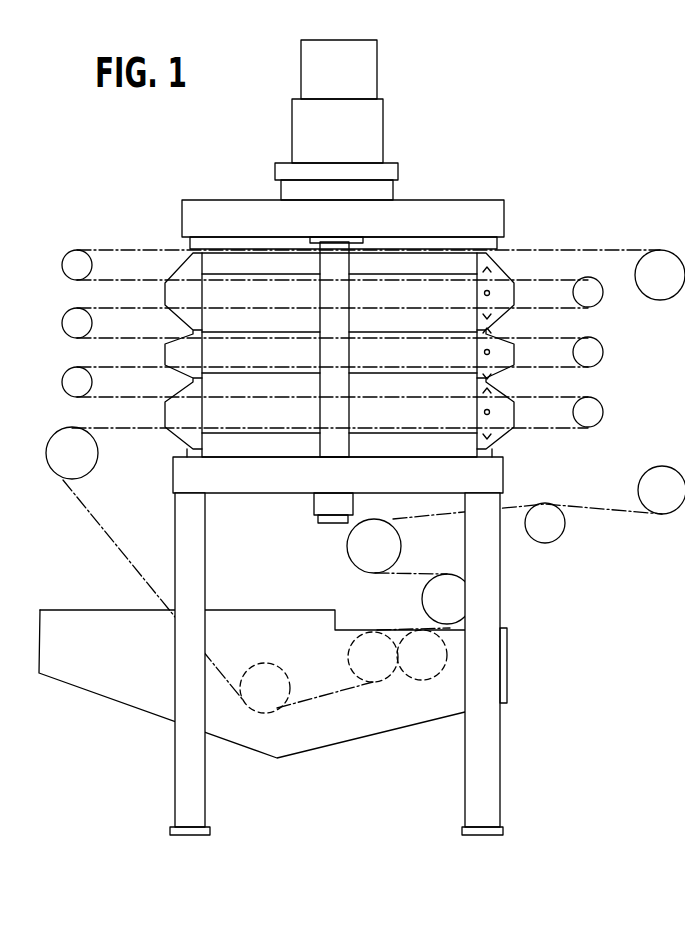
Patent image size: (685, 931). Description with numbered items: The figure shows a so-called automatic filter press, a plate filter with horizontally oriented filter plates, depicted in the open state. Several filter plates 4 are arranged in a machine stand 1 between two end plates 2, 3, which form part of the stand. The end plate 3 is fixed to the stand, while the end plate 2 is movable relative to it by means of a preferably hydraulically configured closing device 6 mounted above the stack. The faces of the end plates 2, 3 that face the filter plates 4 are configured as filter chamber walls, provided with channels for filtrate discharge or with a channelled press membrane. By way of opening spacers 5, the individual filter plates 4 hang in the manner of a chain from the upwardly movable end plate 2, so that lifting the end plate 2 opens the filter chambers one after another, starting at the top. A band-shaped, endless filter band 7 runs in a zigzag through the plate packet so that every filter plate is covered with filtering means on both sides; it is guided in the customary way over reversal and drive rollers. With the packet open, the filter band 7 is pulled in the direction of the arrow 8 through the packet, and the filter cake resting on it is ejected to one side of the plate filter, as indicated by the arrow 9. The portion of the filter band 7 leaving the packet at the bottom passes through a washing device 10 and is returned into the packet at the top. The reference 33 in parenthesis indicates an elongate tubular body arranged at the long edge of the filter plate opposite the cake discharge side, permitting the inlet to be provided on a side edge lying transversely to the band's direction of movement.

The machine stand 1 is at (525, 592).
The end plate 2 is at (343, 203).
The end plate 3 is at (504, 468).
The filter plates 4 is at (458, 320).
The opening spacers 5 is at (185, 290).
The closing device 6 is at (372, 133).
The filter band 7 is at (95, 530).
The arrow 8 is at (134, 566).
The arrow 9 is at (50, 300).
The washing device 10 is at (352, 730).
The tubular body 33 is at (496, 413).